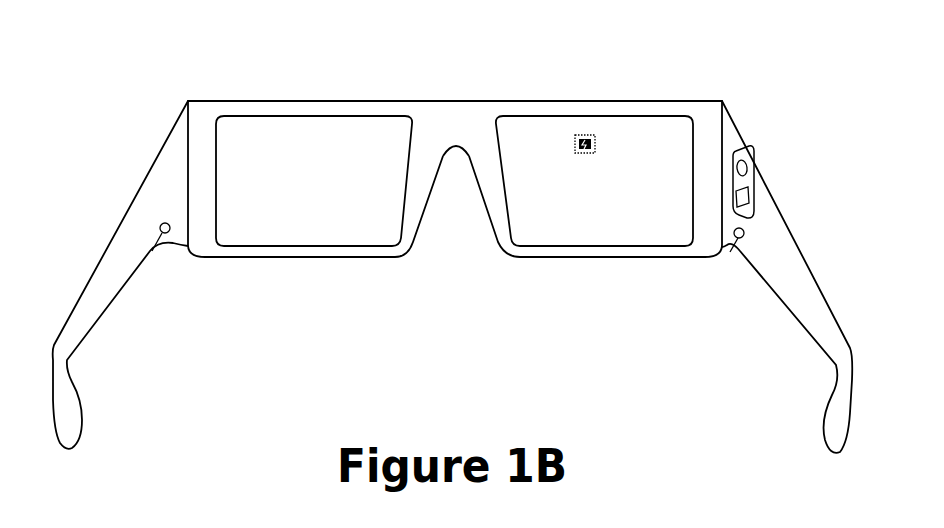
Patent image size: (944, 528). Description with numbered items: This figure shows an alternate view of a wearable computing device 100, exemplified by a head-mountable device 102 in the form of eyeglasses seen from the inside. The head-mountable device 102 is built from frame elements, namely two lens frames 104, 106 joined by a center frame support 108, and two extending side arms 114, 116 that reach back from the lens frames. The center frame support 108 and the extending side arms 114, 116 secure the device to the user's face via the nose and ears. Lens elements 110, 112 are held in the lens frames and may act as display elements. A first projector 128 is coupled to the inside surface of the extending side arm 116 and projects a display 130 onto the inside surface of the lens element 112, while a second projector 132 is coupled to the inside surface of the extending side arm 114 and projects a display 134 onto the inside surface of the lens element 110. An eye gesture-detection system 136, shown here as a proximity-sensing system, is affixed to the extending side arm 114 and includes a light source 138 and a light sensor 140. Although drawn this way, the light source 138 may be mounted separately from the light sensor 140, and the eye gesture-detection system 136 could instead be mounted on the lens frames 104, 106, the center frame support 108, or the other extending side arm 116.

The wearable computing device 100 is at (234, 73).
The head-mountable device 102 is at (713, 74).
The lens frame 104 is at (707, 258).
The lens frame 106 is at (237, 258).
The center frame support 108 is at (453, 100).
The lens element 110 is at (562, 237).
The lens element 112 is at (333, 238).
The extending side arm 114 is at (778, 204).
The extending side arm 116 is at (110, 239).
The first projector 128 is at (153, 245).
The display 130 is at (306, 146).
The second projector 132 is at (734, 250).
The display 134 is at (572, 139).
The eye gesture-detection system 136 is at (738, 152).
The light source 138 is at (735, 158).
The light sensor 140 is at (736, 194).